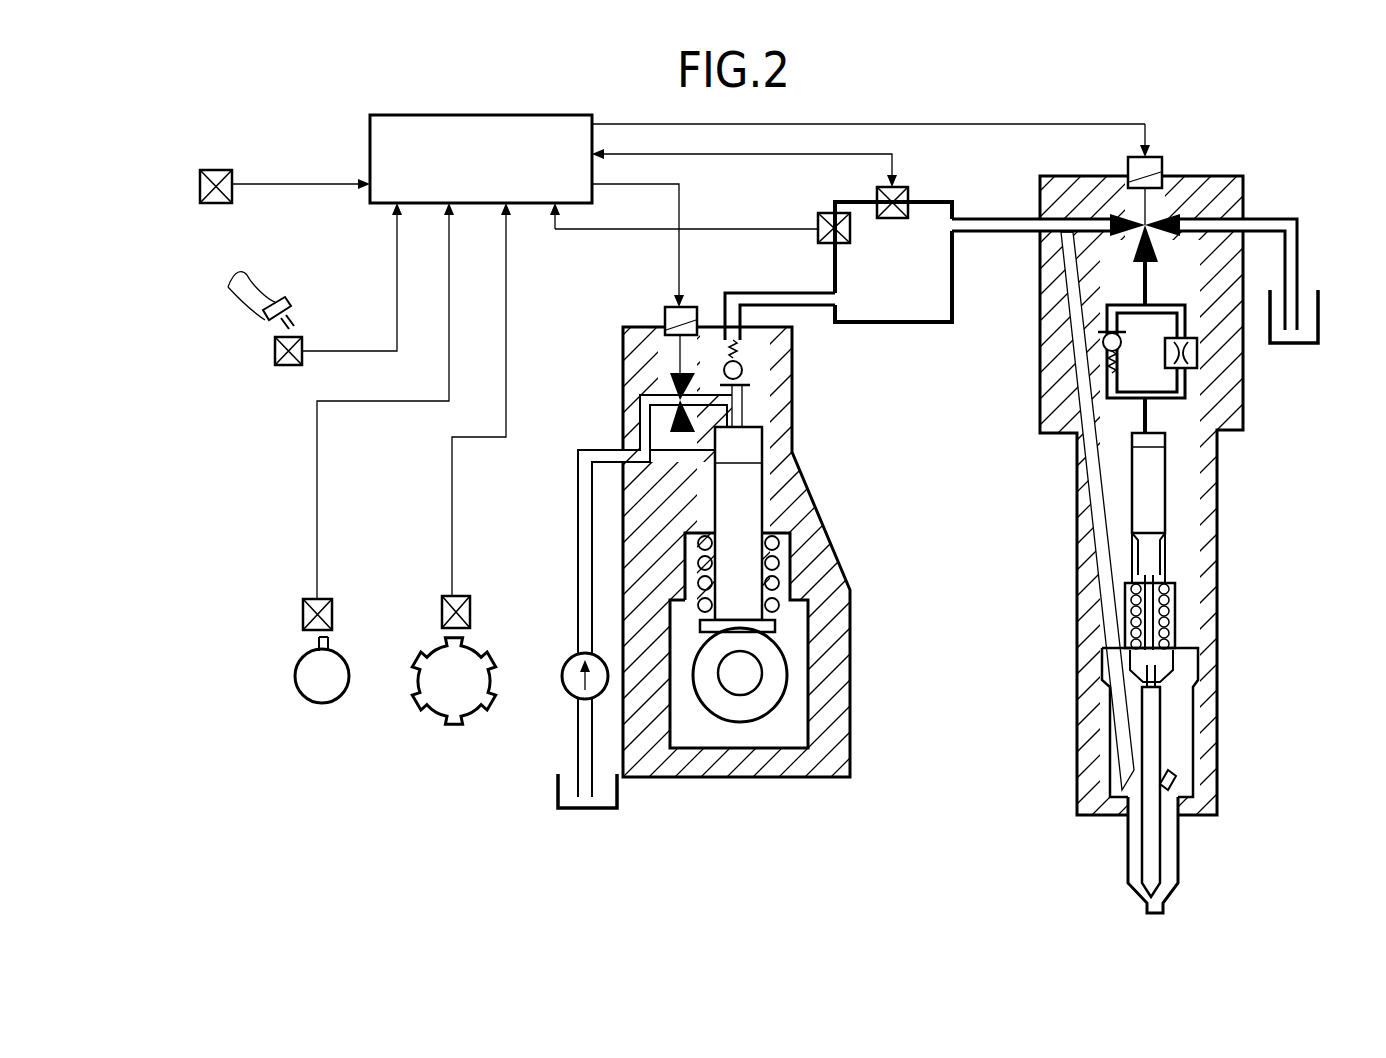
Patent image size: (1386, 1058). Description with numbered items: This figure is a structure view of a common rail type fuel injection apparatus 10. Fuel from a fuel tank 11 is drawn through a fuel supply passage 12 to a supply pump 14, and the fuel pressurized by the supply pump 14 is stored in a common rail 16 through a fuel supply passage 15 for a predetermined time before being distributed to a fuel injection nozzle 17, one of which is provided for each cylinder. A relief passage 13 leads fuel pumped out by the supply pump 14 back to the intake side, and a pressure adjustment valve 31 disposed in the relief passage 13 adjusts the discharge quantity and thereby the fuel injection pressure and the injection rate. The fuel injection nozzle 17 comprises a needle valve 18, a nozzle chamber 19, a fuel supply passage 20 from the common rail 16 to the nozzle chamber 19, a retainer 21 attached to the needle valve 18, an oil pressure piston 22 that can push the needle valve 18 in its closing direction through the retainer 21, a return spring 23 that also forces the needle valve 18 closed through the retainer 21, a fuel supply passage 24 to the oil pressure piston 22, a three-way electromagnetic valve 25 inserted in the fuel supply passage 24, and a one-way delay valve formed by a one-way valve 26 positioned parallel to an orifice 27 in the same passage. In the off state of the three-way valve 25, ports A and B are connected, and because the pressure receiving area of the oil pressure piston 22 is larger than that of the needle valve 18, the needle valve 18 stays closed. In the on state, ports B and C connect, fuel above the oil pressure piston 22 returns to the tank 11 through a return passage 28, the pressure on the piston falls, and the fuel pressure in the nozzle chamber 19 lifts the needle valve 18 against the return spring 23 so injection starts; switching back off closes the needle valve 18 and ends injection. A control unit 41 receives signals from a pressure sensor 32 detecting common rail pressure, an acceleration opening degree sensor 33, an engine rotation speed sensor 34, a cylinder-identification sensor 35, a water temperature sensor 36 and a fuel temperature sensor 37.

The fuel injection apparatus 10 is at (1055, 100).
The fuel tank 11 is at (558, 790).
The fuel supply passage 12 is at (578, 526).
The relief passage 13 is at (664, 391).
The supply pump 14 is at (759, 737).
The fuel supply passage 15 is at (800, 296).
The common rail 16 is at (878, 322).
The fuel injection nozzle 17 is at (1060, 764).
The needle valve 18 is at (1155, 745).
The nozzle chamber 19 is at (1170, 782).
The fuel supply passage 20 is at (1075, 331).
The retainer 21 is at (1165, 655).
The oil pressure piston 22 is at (1150, 483).
The return spring 23 is at (1168, 608).
The fuel supply passage 24 is at (1140, 278).
The three-way electromagnetic valve 25 is at (1177, 207).
The one-way valve 26 is at (1100, 346).
The orifice 27 is at (1198, 352).
The return passage 28 is at (1300, 232).
The pressure adjustment valve 31 is at (628, 352).
The pressure sensor 32 is at (818, 215).
The acceleration opening degree sensor 33 is at (275, 350).
The engine rotation speed sensor 34 is at (442, 608).
The cylinder-identification sensor 35 is at (303, 612).
The water temperature sensor 36 is at (213, 168).
The fuel temperature sensor 37 is at (908, 197).
The control unit 41 is at (387, 115).